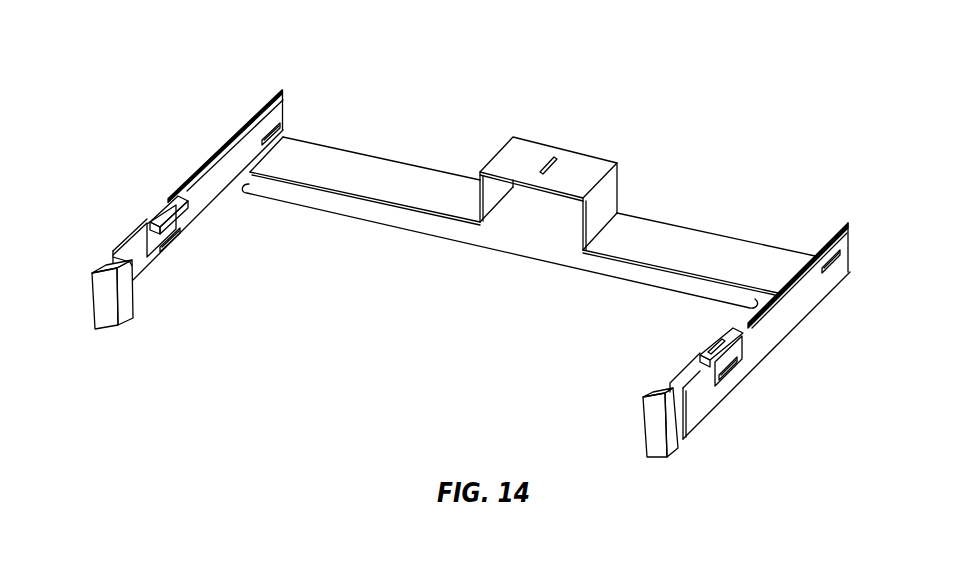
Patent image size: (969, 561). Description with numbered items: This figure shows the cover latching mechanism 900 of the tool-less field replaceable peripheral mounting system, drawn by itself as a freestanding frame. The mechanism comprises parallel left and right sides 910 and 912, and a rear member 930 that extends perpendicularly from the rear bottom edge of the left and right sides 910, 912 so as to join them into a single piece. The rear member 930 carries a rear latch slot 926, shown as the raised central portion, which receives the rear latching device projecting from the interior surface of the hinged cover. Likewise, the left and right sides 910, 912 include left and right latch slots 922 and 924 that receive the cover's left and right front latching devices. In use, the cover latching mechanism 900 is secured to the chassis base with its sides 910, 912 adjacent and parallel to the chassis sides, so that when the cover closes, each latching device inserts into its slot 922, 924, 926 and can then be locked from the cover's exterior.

The cover latching mechanism 900 is at (723, 112).
The left side 910 is at (219, 206).
The right side 912 is at (734, 384).
The left latch slot 922 is at (164, 207).
The right latch slot 924 is at (701, 350).
The rear latch slot 926 is at (580, 174).
The rear member 930 is at (521, 256).